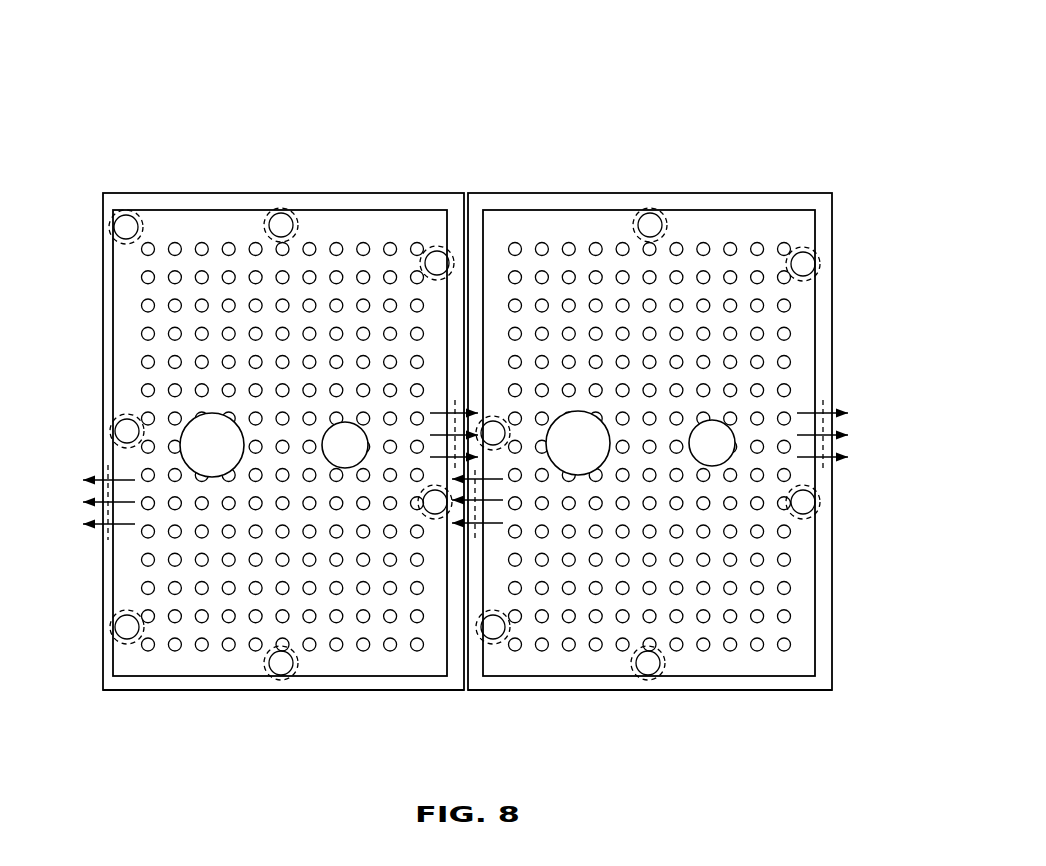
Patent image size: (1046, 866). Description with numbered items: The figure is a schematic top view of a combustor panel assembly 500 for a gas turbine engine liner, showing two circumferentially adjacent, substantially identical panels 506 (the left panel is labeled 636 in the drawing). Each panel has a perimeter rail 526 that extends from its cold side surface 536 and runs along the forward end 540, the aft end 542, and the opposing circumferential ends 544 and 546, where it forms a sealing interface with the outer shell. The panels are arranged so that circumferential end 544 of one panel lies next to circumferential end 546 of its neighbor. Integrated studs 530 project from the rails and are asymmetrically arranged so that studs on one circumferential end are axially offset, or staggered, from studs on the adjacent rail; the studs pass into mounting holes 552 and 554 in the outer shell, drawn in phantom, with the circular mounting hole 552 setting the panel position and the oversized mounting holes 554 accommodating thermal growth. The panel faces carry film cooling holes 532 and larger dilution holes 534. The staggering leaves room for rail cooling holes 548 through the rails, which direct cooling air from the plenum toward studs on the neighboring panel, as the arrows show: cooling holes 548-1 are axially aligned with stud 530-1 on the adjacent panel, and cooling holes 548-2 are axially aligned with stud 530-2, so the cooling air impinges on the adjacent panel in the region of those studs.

The combustor panel assembly 500 is at (712, 92).
The panel 506 is at (643, 182).
The first panel 636 is at (158, 182).
The perimeter rail 526 is at (249, 210).
The stud 530 is at (443, 258).
The stud 530-1 is at (437, 503).
The stud 530-2 is at (503, 447).
The film cooling hole 532 is at (362, 652).
The dilution hole 534 is at (213, 432).
The cold side surface 536 is at (133, 367).
The forward end 540 is at (258, 691).
The aft end 542 is at (399, 193).
The circumferential end 544 is at (100, 414).
The circumferential end 546 is at (483, 578).
The rail cooling hole 548 is at (110, 442).
The cooling hole 548-1 is at (487, 560).
The cooling hole 548-2 is at (453, 405).
The mounting hole 552 is at (111, 235).
The mounting hole 554 is at (110, 626).